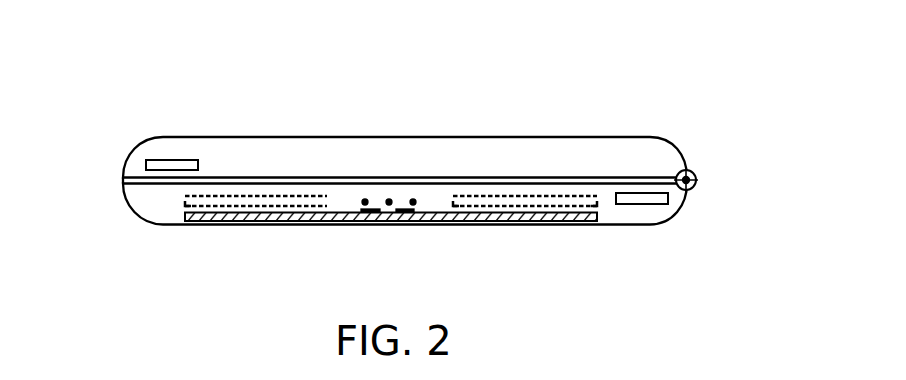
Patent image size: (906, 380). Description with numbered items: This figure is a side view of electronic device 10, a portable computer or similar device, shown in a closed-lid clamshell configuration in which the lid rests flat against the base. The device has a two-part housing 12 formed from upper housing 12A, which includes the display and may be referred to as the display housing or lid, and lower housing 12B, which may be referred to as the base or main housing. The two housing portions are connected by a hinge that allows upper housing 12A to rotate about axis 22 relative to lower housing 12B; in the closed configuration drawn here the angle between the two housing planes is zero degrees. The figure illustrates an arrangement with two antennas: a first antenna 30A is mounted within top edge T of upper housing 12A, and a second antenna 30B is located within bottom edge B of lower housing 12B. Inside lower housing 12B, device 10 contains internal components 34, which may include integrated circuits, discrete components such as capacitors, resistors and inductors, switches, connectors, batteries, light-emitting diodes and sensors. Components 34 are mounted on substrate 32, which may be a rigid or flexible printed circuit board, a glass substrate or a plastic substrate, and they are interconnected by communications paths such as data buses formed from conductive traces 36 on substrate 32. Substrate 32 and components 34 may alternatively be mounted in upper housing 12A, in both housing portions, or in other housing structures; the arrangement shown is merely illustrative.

The electronic device 10 is at (674, 41).
The housing 12 is at (103, 127).
The upper housing 12A is at (422, 137).
The lower housing 12B is at (135, 222).
The axis 22 is at (697, 179).
The first antenna 30A is at (190, 160).
The second antenna 30B is at (655, 204).
The substrate 32 is at (425, 213).
The components 34 is at (330, 205).
The traces 36 is at (402, 213).
The top edge T is at (143, 122).
The bottom edge B is at (706, 135).